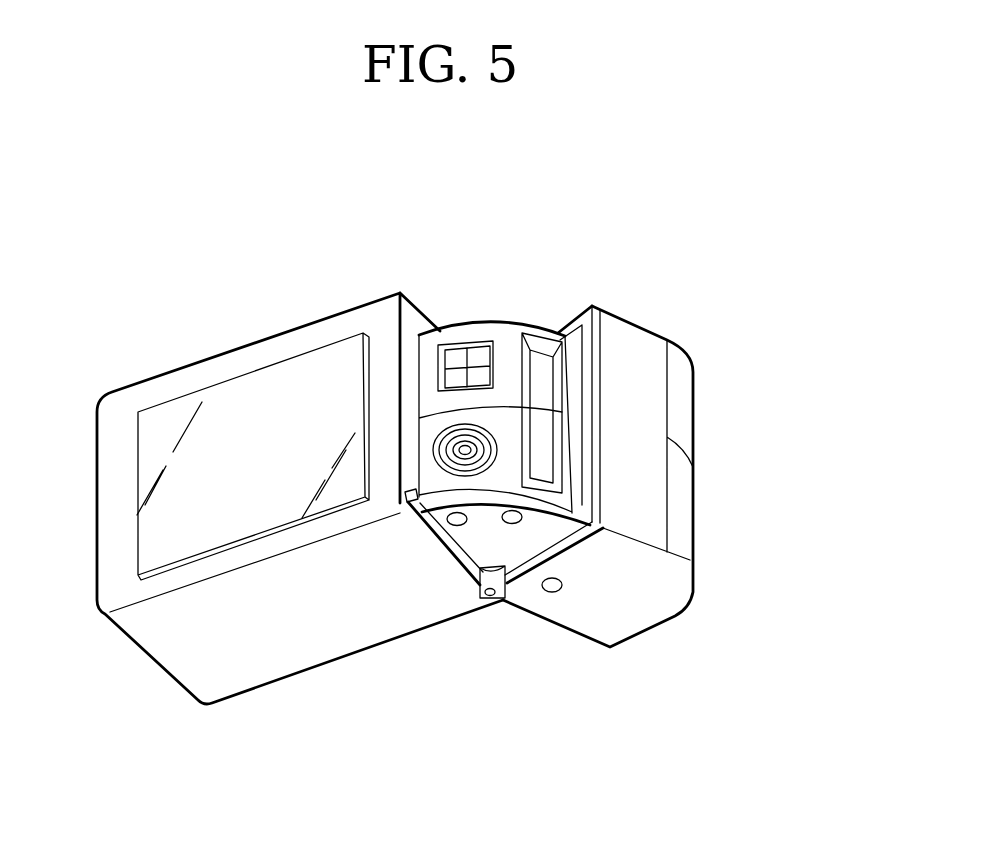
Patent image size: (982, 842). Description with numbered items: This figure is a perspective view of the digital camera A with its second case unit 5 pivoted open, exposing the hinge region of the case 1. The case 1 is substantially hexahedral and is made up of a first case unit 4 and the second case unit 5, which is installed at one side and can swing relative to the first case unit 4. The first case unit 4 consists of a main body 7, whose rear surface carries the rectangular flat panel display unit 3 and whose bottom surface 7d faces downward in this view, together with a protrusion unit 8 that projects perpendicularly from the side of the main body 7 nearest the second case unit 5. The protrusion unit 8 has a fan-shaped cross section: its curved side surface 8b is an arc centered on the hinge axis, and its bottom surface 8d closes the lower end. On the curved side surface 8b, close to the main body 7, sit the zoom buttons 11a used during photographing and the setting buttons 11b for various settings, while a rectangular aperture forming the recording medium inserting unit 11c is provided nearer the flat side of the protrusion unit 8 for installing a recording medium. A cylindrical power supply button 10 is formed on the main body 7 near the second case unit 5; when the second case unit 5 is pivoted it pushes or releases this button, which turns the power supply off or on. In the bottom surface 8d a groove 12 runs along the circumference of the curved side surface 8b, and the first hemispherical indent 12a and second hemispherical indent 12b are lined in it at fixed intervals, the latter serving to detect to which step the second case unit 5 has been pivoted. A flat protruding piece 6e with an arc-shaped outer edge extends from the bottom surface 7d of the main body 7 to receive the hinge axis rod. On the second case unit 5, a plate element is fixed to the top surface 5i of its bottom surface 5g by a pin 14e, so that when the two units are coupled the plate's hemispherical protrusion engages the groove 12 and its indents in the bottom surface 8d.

The case 1 is at (665, 190).
The digital camera A is at (720, 208).
The display unit 3 is at (245, 515).
The first case unit 4 is at (275, 330).
The second case unit 5 is at (642, 328).
The bottom surface 5g is at (643, 600).
The top surface 5i is at (567, 587).
The protruding piece 6e is at (497, 600).
The main body 7 is at (220, 347).
The bottom surface 7d is at (350, 622).
The protrusion unit 8 is at (520, 320).
The curved side surface 8b is at (483, 333).
The bottom surface 8d is at (563, 513).
The power supply button 10 is at (402, 495).
The zoom buttons 11a is at (448, 378).
The setting buttons 11b is at (433, 437).
The recording medium inserting unit 11c is at (542, 387).
The groove 12 is at (532, 522).
The first hemispherical indent 12a is at (455, 520).
The second hemispherical indent 12b is at (495, 512).
The pin 14e is at (550, 593).